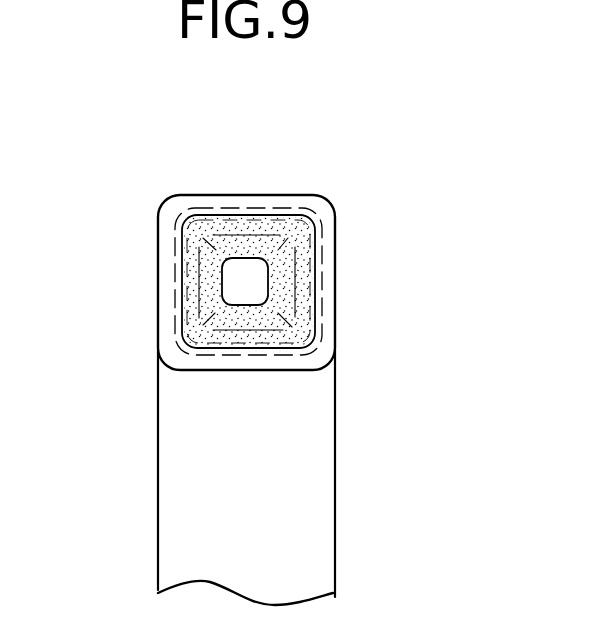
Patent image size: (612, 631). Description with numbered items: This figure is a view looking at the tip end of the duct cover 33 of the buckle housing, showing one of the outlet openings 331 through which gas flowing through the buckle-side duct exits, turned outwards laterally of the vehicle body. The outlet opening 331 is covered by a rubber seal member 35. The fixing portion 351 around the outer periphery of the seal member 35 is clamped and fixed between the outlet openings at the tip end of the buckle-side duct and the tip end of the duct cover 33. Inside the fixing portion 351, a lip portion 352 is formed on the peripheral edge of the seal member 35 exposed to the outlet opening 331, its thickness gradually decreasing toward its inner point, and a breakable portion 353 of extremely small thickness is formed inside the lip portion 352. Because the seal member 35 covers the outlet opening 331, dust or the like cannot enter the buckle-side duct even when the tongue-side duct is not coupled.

The duct cover 33 is at (343, 455).
The outlet opening 331 is at (332, 238).
The seal member 35 is at (265, 232).
The fixing portion 351 is at (318, 295).
The lip portion 352 is at (208, 277).
The breakable portion 353 is at (253, 293).